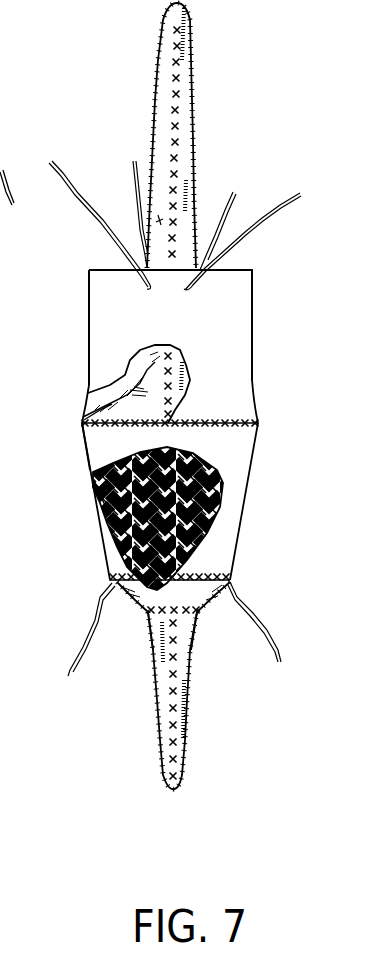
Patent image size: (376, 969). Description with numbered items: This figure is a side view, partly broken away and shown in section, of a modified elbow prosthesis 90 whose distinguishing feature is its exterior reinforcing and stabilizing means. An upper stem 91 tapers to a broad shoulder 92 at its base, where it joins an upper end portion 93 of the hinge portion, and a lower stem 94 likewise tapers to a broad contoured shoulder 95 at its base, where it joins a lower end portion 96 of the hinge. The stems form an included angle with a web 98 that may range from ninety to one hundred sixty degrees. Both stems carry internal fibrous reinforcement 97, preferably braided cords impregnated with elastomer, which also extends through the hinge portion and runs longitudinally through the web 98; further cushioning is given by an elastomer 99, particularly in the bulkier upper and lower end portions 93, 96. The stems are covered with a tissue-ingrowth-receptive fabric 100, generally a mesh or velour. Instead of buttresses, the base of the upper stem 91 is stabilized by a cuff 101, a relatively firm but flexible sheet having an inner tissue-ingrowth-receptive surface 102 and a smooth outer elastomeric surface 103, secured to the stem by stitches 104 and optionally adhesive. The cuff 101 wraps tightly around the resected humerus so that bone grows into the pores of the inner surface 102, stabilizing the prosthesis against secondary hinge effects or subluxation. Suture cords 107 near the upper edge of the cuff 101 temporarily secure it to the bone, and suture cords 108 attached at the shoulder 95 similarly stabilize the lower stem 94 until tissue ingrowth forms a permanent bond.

The elbow prosthesis 90 is at (254, 386).
The upper stem 91 is at (185, 95).
The broad shoulder 92 is at (83, 405).
The upper end portion 93 is at (82, 445).
The lower stem 94 is at (186, 735).
The broad contoured shoulder 95 is at (210, 613).
The lower end portion 96 is at (118, 565).
The internal fibrous reinforcement 97 is at (215, 495).
The web 98 is at (92, 490).
The elastomer 99 is at (83, 505).
The tissue-ingrowth-receptive fabric 100 is at (185, 50).
The cuff 101 is at (252, 293).
The inner tissue-ingrowth-receptive surface 102 is at (88, 397).
The smooth outer elastomeric surface 103 is at (89, 293).
The stitches 104 is at (250, 414).
The suture cords 107 is at (131, 170).
The suture cords 108 is at (82, 660).